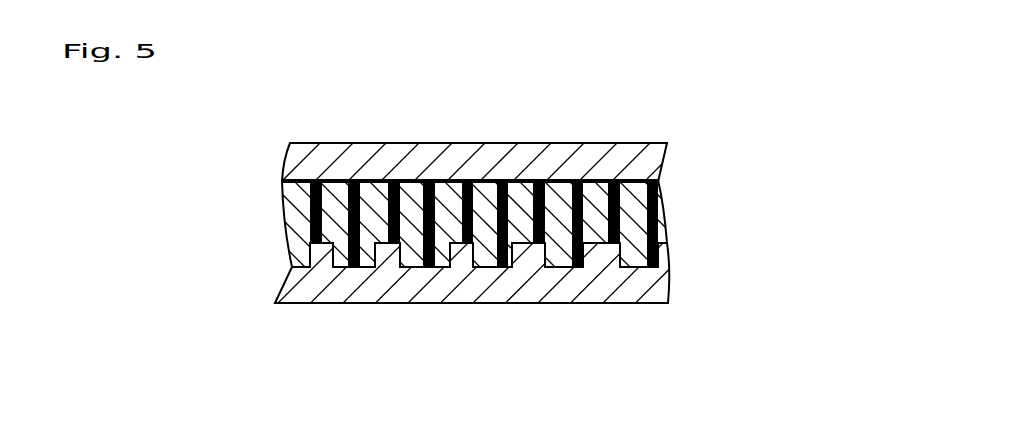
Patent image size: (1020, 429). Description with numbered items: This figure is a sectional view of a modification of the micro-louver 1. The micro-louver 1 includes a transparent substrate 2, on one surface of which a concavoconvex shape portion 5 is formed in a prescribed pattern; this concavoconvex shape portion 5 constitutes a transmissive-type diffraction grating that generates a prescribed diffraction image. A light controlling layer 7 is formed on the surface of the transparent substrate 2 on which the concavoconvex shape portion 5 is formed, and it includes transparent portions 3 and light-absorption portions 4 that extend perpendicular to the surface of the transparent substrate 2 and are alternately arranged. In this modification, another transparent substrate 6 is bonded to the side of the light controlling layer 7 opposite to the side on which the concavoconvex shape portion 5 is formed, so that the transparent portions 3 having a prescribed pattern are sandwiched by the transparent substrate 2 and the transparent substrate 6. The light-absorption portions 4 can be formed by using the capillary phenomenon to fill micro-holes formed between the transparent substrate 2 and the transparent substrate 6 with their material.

The micro-louver 1 is at (752, 118).
The transparent substrate 2 is at (662, 291).
The transparent portions 3 is at (413, 253).
The light-absorption portions 4 is at (505, 265).
The concavoconvex shape portion 5 is at (611, 258).
The transparent substrate 6 is at (578, 153).
The light controlling layer 7 is at (387, 355).